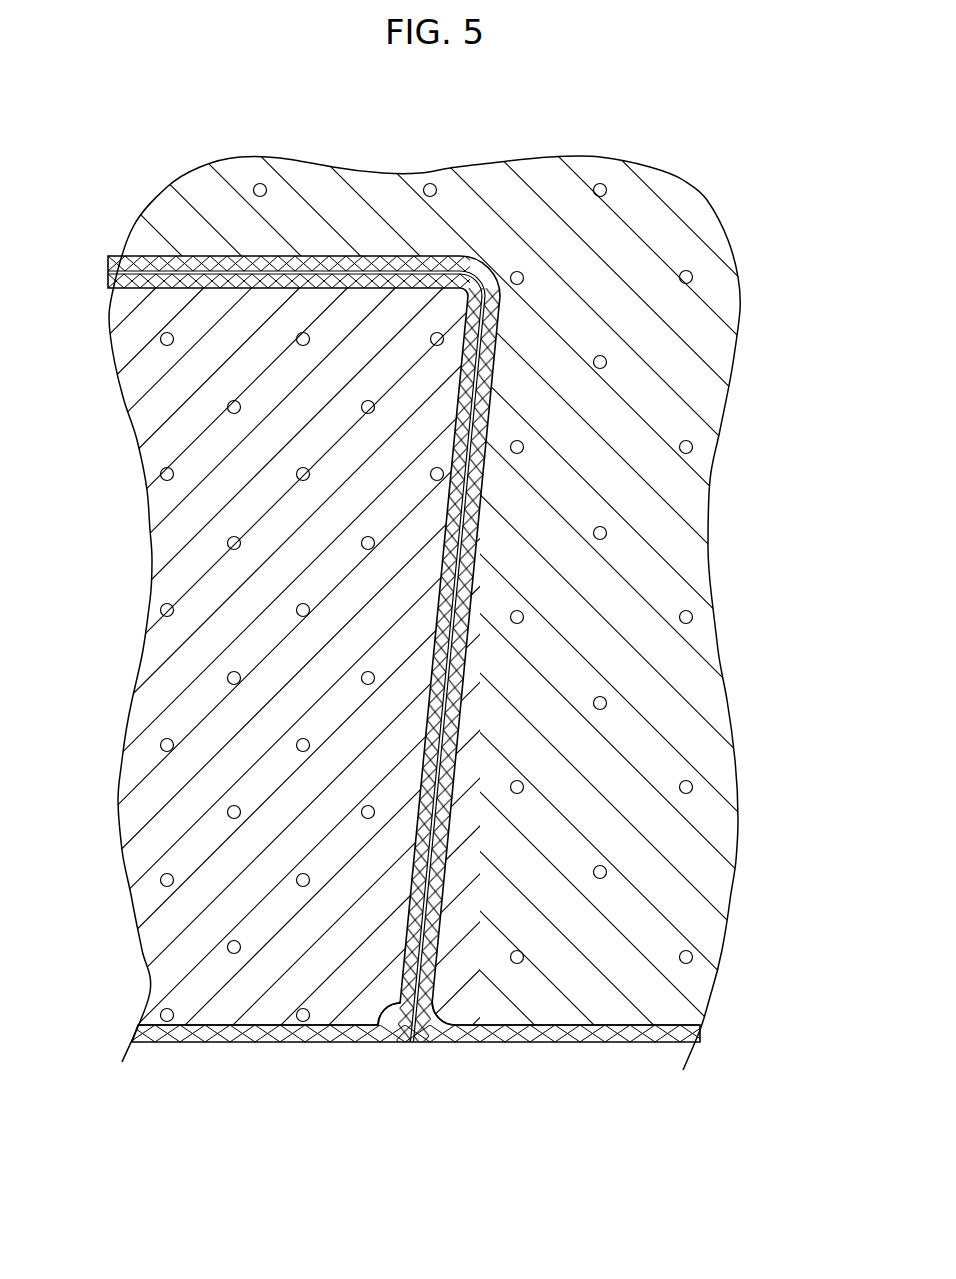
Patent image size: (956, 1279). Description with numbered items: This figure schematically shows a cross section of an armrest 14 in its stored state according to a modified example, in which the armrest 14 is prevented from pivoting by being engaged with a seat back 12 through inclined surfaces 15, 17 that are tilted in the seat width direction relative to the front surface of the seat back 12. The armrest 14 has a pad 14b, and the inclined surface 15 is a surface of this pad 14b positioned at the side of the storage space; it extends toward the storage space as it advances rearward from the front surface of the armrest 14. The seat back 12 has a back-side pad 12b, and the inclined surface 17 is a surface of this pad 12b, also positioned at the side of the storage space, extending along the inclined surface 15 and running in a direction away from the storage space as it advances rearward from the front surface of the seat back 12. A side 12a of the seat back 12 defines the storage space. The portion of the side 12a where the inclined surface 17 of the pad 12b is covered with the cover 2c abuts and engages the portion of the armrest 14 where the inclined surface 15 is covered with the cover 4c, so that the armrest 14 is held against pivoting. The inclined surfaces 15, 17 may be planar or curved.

The seat back 12 is at (593, 1080).
The side of the seat back 12a is at (404, 1042).
The pad 12b is at (690, 665).
The armrest 14 is at (178, 1092).
The pad 14b is at (155, 532).
The inclined surface 15 is at (443, 822).
The inclined surface 17 is at (435, 672).
The cover 2c is at (655, 1043).
The cover 4c is at (384, 1042).